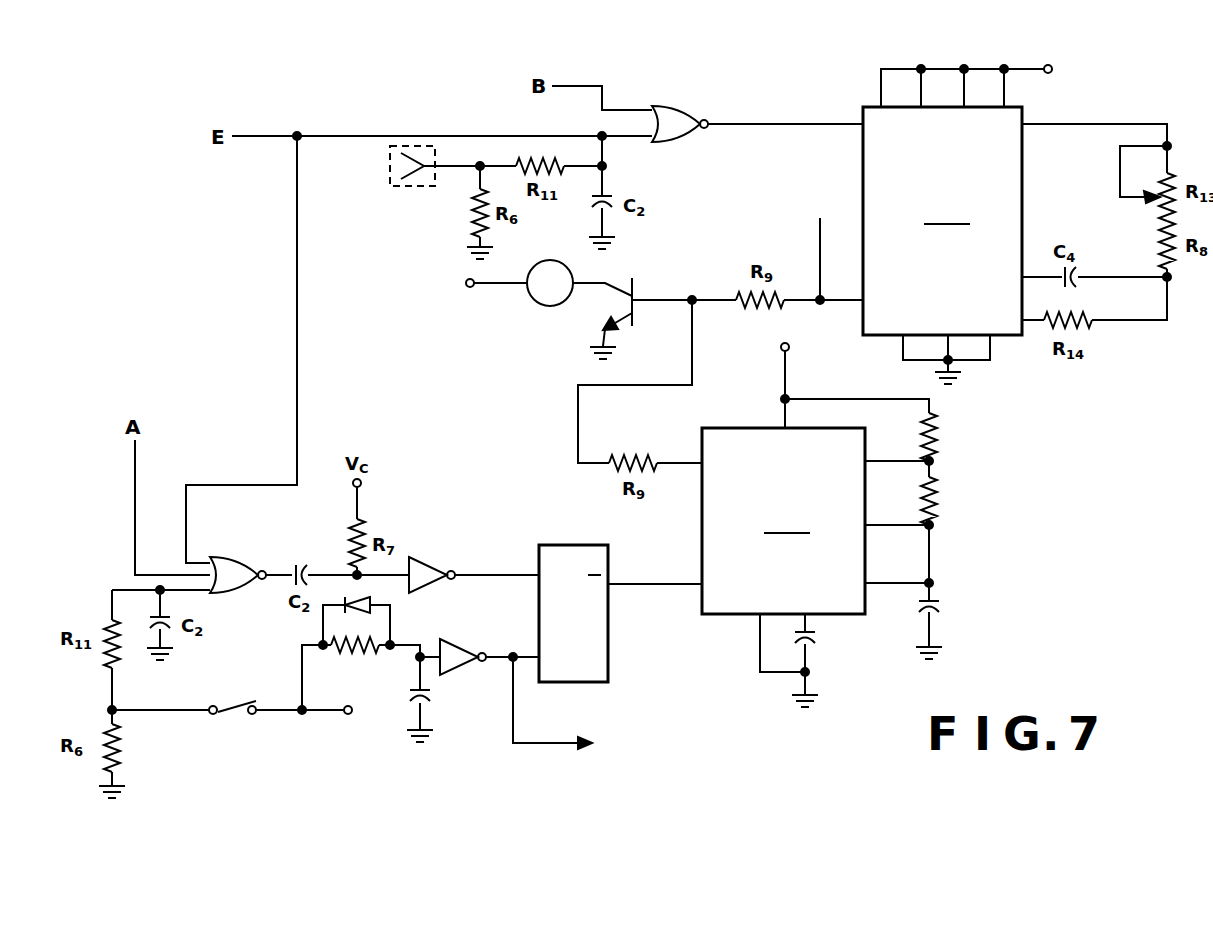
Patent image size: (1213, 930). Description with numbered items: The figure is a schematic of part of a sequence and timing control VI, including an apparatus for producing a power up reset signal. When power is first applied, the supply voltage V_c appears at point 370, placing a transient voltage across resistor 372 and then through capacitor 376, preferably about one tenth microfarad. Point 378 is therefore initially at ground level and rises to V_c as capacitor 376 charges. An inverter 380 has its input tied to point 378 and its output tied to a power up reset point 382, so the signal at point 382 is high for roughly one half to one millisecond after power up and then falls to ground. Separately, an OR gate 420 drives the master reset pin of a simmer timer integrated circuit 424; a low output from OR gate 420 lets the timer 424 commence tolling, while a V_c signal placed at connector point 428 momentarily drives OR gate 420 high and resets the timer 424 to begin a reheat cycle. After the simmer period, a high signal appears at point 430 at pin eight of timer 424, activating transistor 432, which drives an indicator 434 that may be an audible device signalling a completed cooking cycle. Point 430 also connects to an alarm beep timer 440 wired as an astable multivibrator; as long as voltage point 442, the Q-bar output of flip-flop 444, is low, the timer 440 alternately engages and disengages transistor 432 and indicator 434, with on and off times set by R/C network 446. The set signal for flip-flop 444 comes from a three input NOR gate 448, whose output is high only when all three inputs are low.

The point 370 is at (305, 715).
The resistor 372 is at (333, 655).
The capacitor 376 is at (432, 712).
The point 378 is at (421, 653).
The inverter 380 is at (458, 645).
The power up reset point 382 is at (513, 652).
The OR gate 420 is at (680, 108).
The simmer timer integrated circuit 424 is at (972, 221).
The connector point 428 is at (395, 187).
The point 430 is at (815, 292).
The transistor 432 is at (646, 293).
The indicator 434 is at (531, 299).
The alarm beep timer 440 is at (783, 512).
The voltage point 442 is at (657, 584).
The flip-flop 444 is at (553, 545).
The R/C network 446 is at (1004, 497).
The three input NOR gate 448 is at (228, 557).
The sequence and timing control VI is at (232, 297).